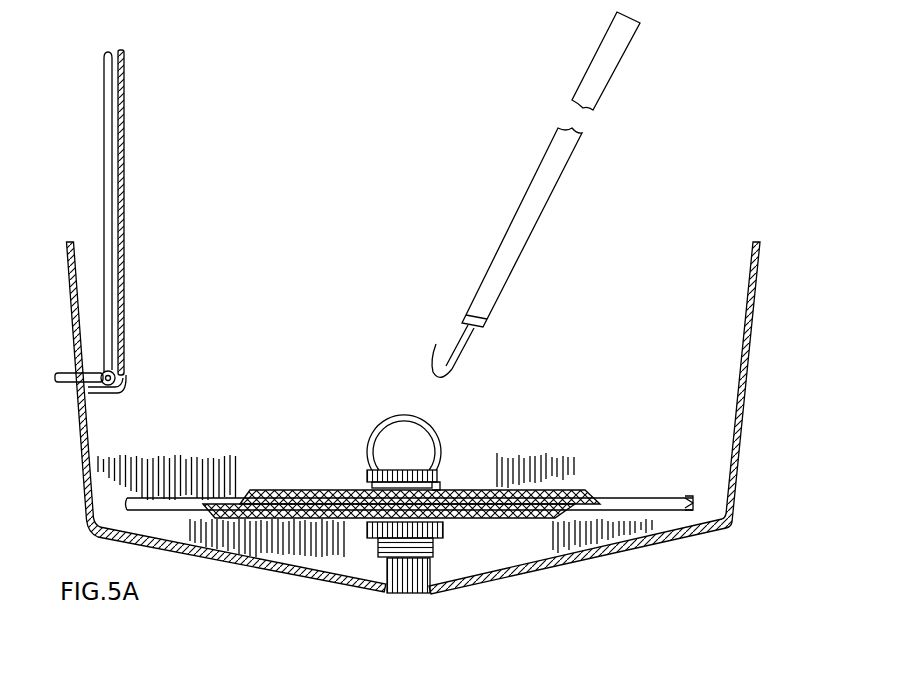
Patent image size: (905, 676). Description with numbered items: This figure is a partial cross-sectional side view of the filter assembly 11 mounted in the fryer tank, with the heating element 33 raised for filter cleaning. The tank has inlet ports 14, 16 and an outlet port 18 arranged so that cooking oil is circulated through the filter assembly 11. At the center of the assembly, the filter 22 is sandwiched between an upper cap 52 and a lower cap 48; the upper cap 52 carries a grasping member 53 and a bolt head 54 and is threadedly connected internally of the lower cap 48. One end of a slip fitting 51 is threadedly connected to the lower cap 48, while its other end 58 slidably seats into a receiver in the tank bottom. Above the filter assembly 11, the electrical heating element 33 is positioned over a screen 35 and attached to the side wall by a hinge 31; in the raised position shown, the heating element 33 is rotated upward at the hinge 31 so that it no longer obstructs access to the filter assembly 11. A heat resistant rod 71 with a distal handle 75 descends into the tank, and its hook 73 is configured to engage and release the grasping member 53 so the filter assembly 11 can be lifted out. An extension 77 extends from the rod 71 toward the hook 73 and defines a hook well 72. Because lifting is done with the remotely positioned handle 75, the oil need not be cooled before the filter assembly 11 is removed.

The filter assembly 11 is at (342, 415).
The inlet port 14 is at (253, 483).
The inlet port 16 is at (243, 527).
The outlet port 18 is at (403, 592).
The filter 22 is at (593, 492).
The hinge 31 is at (118, 385).
The heating element 33 is at (112, 335).
The screen 35 is at (127, 281).
The lower cap 48 is at (443, 531).
The slip fitting 51 is at (425, 558).
The upper cap 52 is at (385, 474).
The grasping member 53 is at (437, 440).
The bolt head 54 is at (443, 483).
The other end of slip fitting 58 is at (660, 497).
The heat resistant rod 71 is at (492, 300).
The hook well 72 is at (458, 337).
The hook 73 is at (452, 367).
The handle 75 is at (607, 60).
The extension 77 is at (457, 333).